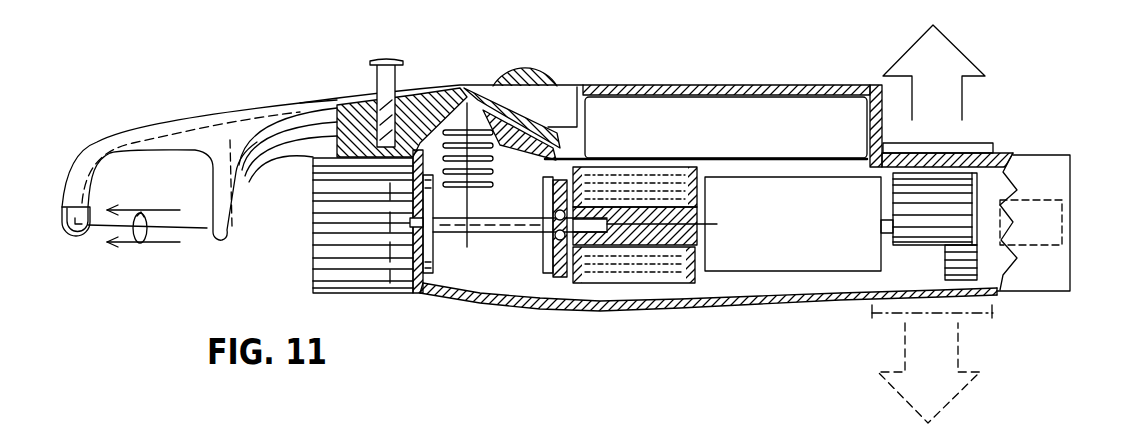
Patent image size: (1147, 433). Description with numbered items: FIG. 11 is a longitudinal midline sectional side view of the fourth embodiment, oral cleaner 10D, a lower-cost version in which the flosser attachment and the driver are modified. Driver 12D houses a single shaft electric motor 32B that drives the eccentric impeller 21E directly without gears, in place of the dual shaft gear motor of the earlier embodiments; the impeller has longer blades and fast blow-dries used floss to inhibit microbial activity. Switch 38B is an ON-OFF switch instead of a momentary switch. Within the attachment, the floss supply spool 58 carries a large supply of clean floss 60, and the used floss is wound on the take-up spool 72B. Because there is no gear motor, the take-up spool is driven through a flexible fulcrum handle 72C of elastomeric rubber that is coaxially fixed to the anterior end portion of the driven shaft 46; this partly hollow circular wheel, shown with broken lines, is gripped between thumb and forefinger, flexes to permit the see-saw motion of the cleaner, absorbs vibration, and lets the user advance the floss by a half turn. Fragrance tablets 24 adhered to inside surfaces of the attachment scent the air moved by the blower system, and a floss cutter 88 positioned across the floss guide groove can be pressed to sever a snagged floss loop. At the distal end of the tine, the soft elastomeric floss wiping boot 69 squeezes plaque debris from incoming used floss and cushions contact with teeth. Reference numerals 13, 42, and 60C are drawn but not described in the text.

The oral cleaner 10D is at (1040, 123).
The driver 12D is at (648, 84).
The housing bottom wall 13 is at (484, 306).
The eccentric impeller 21E is at (978, 192).
The fragrance tablets 24 is at (512, 150).
The single shaft electric motor 32B is at (813, 241).
The ON-OFF switch 38B is at (570, 113).
The battery pack 42 is at (1045, 245).
The driven shaft 46 is at (592, 224).
The floss supply spool 58 is at (688, 167).
The clean floss 60 is at (660, 283).
The handle mounting block 60C is at (363, 100).
The floss wiping boot 69 is at (68, 238).
The take-up spool 72B is at (433, 260).
The flexible fulcrum handle 72C is at (313, 176).
The floss cutter 88 is at (400, 60).